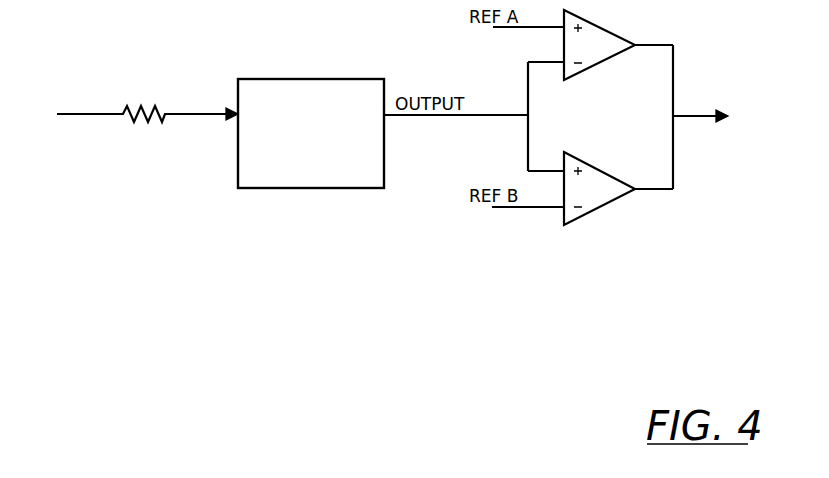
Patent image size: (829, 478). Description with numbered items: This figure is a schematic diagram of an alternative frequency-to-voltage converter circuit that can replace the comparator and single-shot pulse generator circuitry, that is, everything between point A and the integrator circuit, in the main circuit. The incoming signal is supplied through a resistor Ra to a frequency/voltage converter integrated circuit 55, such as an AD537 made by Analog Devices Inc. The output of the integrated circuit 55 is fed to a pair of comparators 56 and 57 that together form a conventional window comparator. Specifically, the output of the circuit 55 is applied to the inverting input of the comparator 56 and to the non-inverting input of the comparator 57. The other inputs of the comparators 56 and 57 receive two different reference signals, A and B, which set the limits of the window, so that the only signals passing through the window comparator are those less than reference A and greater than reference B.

The resistor Ra is at (122, 112).
The frequency/voltage converter integrated circuit 55 is at (292, 188).
The comparator 56 is at (592, 68).
The comparator 57 is at (593, 215).